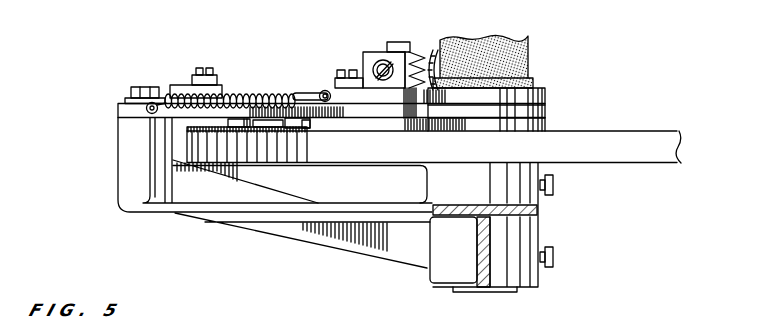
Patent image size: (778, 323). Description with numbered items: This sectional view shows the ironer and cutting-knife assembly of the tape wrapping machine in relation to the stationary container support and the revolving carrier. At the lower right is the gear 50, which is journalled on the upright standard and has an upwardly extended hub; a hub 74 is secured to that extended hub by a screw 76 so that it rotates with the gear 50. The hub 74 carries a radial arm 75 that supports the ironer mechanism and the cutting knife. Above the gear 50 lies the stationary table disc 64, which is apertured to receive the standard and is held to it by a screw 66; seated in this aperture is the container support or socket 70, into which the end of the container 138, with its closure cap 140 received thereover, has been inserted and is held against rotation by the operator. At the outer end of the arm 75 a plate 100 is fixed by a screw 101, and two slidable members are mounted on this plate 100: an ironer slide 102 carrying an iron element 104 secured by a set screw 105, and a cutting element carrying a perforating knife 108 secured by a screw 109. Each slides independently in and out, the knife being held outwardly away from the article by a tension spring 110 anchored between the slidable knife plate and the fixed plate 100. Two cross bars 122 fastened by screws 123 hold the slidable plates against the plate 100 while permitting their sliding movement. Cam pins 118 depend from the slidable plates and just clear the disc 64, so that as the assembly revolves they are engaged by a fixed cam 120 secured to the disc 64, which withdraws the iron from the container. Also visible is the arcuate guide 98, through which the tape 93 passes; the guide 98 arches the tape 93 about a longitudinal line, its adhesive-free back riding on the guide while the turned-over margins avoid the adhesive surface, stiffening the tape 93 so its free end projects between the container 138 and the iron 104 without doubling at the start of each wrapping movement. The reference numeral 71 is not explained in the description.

The gear 50 is at (510, 290).
The table disc 64 is at (622, 138).
The screw 66 is at (555, 184).
The container support or socket 70 is at (545, 92).
The washer 71 is at (543, 110).
The hub 74 is at (523, 230).
The arm 75 is at (290, 228).
The screw 76 is at (555, 257).
The tape 93 is at (437, 68).
The guide 98 is at (432, 50).
The plate 100 is at (127, 105).
The screw 101 is at (147, 90).
The ironer slide 102 is at (273, 90).
The iron element 104 is at (422, 50).
The set screw 105 is at (388, 43).
The perforating knife 108 is at (415, 63).
The screw 109 is at (378, 66).
The tension spring 110 is at (260, 92).
The cam pins 118 is at (273, 127).
The fixed cam 120 is at (307, 128).
The cross bars 122 is at (193, 78).
The screws 123 is at (200, 67).
The container 138 is at (530, 50).
The closure cap 140 is at (532, 78).